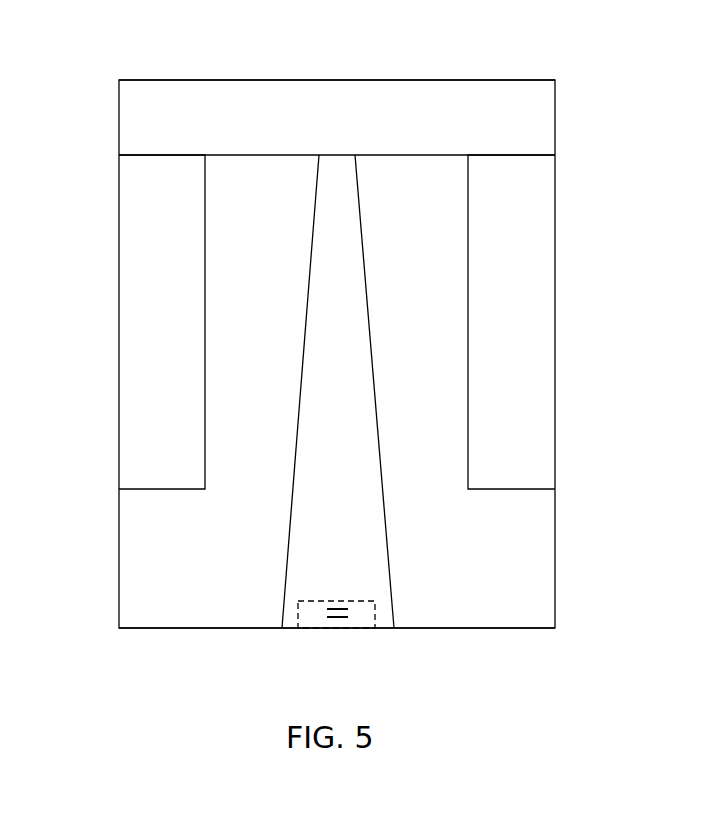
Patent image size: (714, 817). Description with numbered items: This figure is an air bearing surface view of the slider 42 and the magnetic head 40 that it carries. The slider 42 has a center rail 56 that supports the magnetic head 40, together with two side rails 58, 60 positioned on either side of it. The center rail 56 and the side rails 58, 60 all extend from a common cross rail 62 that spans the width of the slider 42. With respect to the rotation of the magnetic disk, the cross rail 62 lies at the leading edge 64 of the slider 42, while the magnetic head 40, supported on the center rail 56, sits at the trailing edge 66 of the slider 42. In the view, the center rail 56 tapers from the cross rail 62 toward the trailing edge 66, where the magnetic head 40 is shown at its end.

The magnetic head 40 is at (318, 630).
The slider 42 is at (118, 576).
The center rail 56 is at (322, 268).
The side rail 58 is at (134, 236).
The side rail 60 is at (540, 236).
The cross rail 62 is at (258, 92).
The leading edge 64 is at (437, 80).
The trailing edge 66 is at (456, 630).